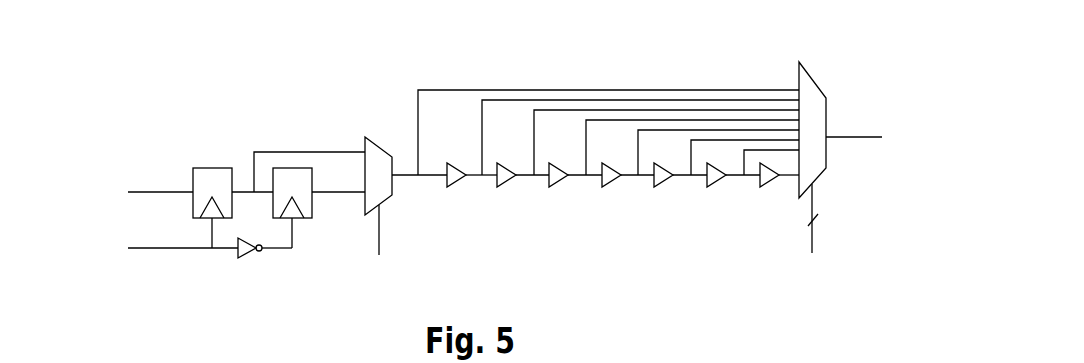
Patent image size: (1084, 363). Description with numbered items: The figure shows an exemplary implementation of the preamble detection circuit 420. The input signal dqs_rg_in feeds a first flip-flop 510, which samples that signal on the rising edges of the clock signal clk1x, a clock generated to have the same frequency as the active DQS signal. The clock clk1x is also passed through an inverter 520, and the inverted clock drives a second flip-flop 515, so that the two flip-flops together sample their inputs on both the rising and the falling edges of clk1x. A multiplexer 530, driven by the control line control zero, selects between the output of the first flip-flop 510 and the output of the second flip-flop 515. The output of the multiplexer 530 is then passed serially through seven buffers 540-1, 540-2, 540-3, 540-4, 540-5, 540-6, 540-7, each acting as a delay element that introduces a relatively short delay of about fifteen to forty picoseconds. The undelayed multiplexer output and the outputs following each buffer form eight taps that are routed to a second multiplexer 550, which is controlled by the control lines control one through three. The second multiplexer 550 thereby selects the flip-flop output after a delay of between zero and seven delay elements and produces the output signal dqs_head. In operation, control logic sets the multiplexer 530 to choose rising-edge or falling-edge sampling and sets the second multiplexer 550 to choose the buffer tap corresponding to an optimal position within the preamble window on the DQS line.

The preamble detection circuit 420 is at (204, 93).
The first flip-flop 510 is at (212, 168).
The second flip-flop 515 is at (312, 176).
The inverter 520 is at (238, 258).
The multiplexer 530 is at (378, 127).
The buffer 540-1 is at (452, 187).
The buffer 540-2 is at (502, 187).
The buffer 540-3 is at (554, 187).
The buffer 540-4 is at (607, 187).
The buffer 540-5 is at (659, 187).
The buffer 540-6 is at (712, 187).
The buffer 540-7 is at (765, 187).
The second multiplexer 550 is at (826, 97).